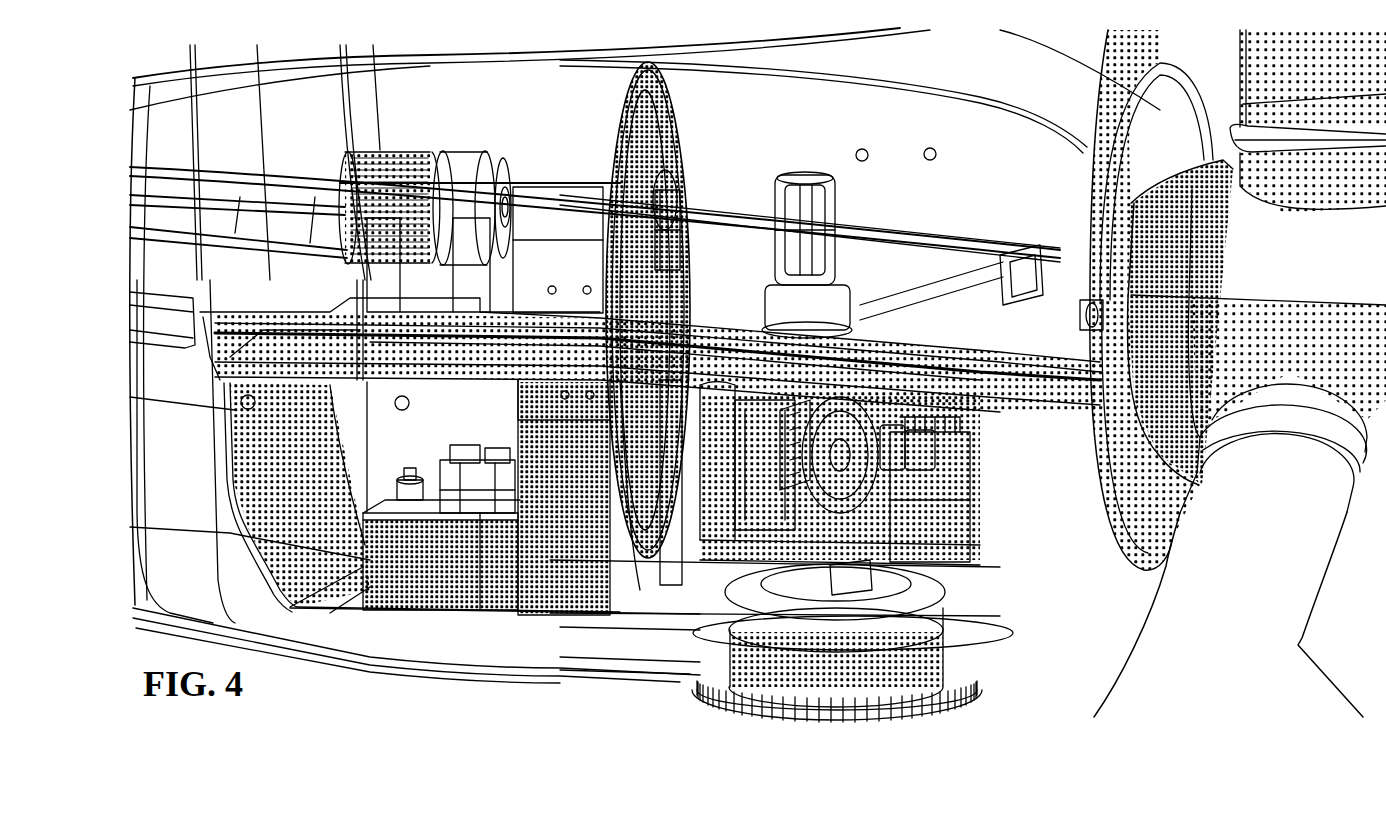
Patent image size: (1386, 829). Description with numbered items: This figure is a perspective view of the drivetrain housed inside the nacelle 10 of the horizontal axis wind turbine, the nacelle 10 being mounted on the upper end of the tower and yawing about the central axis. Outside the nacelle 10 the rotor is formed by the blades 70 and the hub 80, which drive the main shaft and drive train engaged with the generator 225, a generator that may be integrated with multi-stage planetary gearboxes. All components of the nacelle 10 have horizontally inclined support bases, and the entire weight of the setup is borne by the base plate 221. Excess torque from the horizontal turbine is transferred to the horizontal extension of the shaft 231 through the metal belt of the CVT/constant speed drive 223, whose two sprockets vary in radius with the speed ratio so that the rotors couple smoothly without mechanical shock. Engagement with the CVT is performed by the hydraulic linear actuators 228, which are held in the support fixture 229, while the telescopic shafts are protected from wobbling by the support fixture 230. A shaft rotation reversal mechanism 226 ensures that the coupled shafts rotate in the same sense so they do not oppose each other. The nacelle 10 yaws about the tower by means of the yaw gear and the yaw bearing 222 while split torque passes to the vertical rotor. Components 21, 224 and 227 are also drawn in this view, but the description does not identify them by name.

The nacelle 10 is at (1284, 119).
The gear assembly 21 is at (870, 527).
The blades 70 is at (1313, 685).
The hub 80 is at (1366, 462).
The base plate 221 is at (633, 618).
The yaw bearing 222 is at (973, 696).
The CVT/constant speed drive 223 is at (590, 582).
The hydraulic unit 224 is at (423, 580).
The generator 225 is at (468, 162).
The shaft rotation reversal mechanism 226 is at (810, 172).
The bracket 227 is at (857, 290).
The hydraulic linear actuators 228 is at (665, 220).
The support fixture 229 is at (660, 176).
The support fixture 230 is at (683, 388).
The shaft 231 is at (1050, 317).